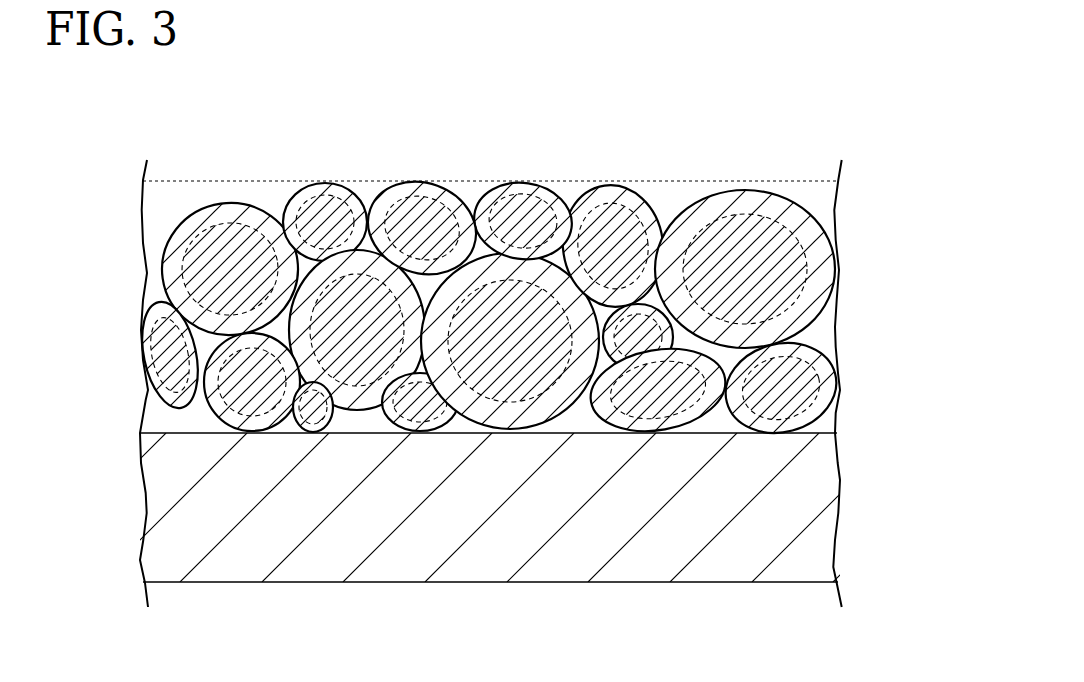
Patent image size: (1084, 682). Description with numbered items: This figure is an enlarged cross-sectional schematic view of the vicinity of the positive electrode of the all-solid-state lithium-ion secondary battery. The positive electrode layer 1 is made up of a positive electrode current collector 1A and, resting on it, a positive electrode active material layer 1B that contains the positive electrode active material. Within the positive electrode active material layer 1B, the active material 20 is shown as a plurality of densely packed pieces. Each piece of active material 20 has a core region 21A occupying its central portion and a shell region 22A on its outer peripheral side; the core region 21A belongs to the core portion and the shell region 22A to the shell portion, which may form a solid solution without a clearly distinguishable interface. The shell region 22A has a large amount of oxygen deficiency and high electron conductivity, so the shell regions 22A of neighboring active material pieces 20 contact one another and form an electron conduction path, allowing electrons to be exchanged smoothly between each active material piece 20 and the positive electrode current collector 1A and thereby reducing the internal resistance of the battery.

The positive electrode layer 1 is at (750, 98).
The positive electrode current collector 1A is at (823, 481).
The positive electrode active material layer 1B is at (823, 343).
The active material 20 is at (460, 193).
The core region 21A is at (410, 208).
The shell region 22A is at (427, 190).